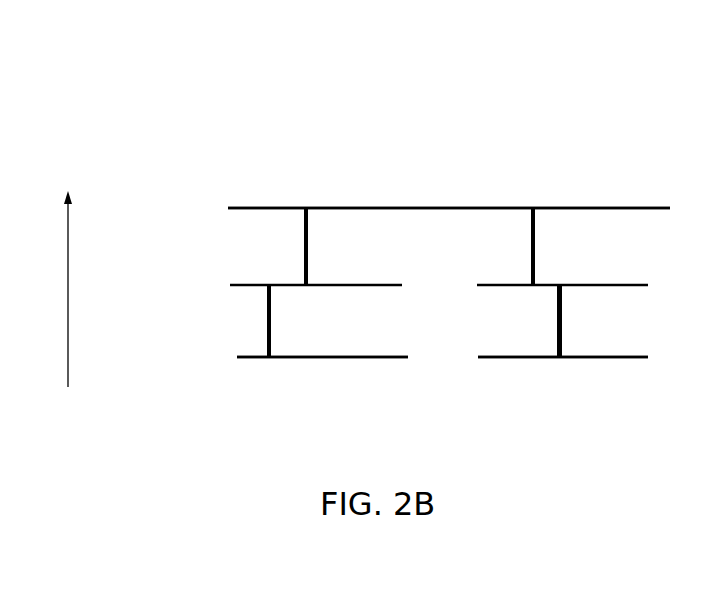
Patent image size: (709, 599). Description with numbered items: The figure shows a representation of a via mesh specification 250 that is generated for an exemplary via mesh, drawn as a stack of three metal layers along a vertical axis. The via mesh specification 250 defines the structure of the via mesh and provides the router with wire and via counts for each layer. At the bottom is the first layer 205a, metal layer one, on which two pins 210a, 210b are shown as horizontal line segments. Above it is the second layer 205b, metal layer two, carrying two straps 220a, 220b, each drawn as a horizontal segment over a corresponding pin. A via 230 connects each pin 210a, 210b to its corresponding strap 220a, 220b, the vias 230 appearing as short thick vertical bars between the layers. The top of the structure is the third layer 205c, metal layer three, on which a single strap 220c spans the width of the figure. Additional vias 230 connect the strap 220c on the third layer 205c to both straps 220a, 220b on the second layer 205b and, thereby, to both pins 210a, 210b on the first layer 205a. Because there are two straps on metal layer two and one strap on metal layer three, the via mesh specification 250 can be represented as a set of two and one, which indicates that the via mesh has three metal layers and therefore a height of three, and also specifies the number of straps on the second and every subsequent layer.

The via mesh specification 250 is at (541, 106).
The first layer 205a is at (370, 358).
The second layer 205b is at (370, 287).
The third layer 205c is at (381, 217).
The pin 210a is at (315, 358).
The pin 210b is at (608, 358).
The strap 220a is at (377, 268).
The strap 220b is at (577, 287).
The strap 220c is at (450, 207).
The via 230 is at (511, 251).